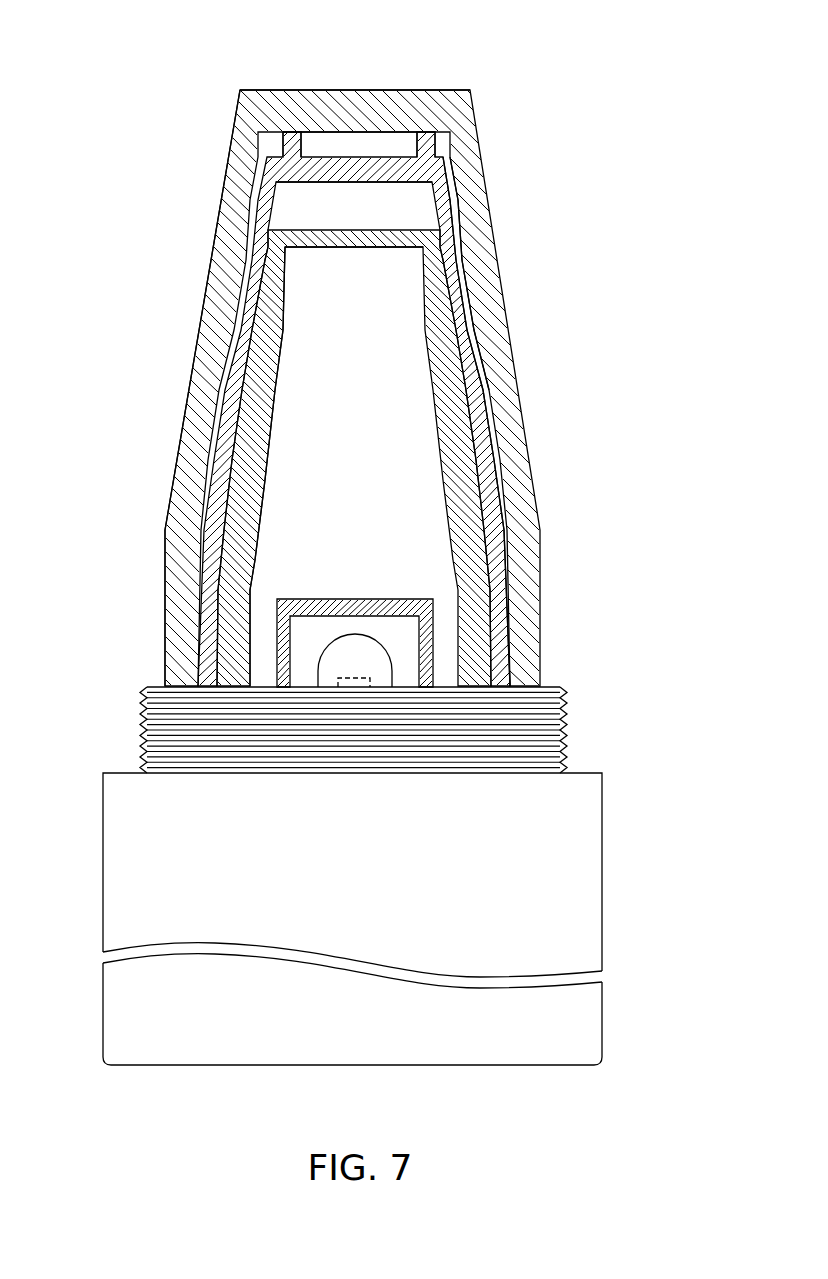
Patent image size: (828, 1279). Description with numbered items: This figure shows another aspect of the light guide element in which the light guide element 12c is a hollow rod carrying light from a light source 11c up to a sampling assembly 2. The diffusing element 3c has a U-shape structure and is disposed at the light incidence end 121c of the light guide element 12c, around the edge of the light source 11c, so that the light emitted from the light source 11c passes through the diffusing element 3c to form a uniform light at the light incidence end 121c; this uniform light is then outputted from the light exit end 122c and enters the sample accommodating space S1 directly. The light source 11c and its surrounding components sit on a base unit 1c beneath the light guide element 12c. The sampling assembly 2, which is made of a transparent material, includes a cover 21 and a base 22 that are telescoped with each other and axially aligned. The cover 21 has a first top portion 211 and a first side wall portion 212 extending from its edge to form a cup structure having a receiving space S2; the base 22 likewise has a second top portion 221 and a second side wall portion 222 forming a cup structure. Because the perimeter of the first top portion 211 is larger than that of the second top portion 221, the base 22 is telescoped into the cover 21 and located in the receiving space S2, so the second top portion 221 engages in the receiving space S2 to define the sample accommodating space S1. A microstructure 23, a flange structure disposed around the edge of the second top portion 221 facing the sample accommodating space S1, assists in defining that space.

The sampling assembly 2 is at (323, 49).
The cover 21 is at (265, 115).
The first top portion 211 is at (377, 97).
The first side wall portion 212 is at (228, 202).
The base 22 is at (312, 163).
The second top portion 221 is at (405, 172).
The second side wall portion 222 is at (465, 325).
The microstructure 23 is at (428, 147).
The sample accommodating space S1 is at (398, 133).
The receiving space S2 is at (464, 232).
The light guide element 12c is at (443, 417).
The light incidence end 121c is at (243, 668).
The light exit end 122c is at (278, 240).
The diffusing element 3c is at (386, 597).
The light source 11c is at (371, 659).
The lamp base 1c is at (105, 836).